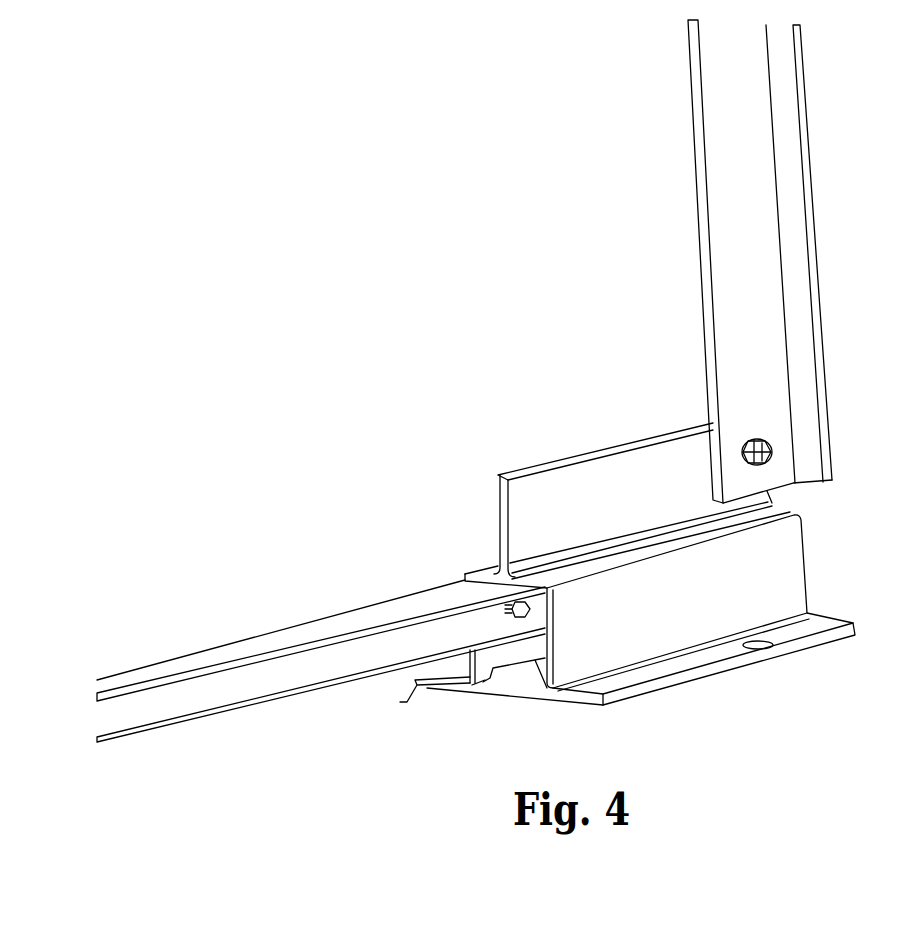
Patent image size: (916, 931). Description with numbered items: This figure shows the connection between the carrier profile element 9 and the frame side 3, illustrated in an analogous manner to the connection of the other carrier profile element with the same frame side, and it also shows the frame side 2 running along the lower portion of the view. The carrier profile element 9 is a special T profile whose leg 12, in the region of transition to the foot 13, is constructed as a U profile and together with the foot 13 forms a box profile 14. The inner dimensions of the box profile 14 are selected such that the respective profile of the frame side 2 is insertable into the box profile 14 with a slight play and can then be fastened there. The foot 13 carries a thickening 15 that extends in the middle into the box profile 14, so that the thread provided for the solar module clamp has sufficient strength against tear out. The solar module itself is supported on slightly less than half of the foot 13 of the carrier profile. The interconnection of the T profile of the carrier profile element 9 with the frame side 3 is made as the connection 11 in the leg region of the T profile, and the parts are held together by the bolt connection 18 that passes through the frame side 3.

The frame side 2 is at (267, 637).
The frame side 3 is at (812, 258).
The carrier profile element 9 is at (790, 568).
The connection 11 is at (771, 646).
The leg 12 is at (543, 492).
The foot 13 is at (432, 685).
The box profile 14 is at (523, 645).
The thickening 15 is at (505, 677).
The bolt connection 18 is at (773, 452).